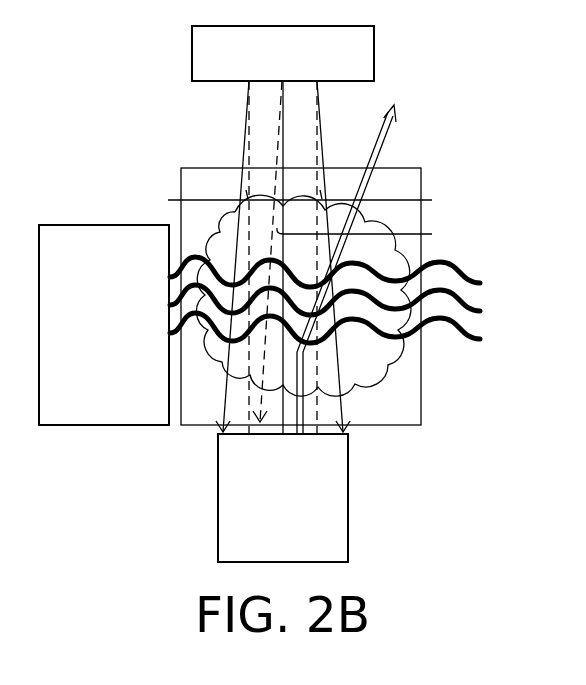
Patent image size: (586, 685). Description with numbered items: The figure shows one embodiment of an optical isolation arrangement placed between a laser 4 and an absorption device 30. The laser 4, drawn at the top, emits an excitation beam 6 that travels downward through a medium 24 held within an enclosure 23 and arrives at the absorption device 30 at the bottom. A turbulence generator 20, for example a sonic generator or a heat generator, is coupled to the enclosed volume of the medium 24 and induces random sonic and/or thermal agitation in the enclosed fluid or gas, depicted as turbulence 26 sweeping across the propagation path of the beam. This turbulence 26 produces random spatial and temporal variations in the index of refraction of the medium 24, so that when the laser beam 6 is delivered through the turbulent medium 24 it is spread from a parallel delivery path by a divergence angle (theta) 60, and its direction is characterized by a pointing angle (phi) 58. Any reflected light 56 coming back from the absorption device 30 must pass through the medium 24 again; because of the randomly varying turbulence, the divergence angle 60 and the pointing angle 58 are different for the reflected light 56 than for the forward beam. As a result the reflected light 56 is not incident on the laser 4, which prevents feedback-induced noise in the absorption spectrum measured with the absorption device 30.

The laser 4 is at (362, 70).
The excitation beam 6 is at (249, 113).
The turbulence generator 20 is at (120, 391).
The enclosure 23 is at (181, 170).
The medium 24 is at (380, 366).
The turbulence 26 is at (476, 328).
The absorption device 30 is at (300, 549).
The reflected light 56 is at (393, 130).
The pointing angle (phi) 58 is at (374, 232).
The divergence angle (theta) 60 is at (302, 198).